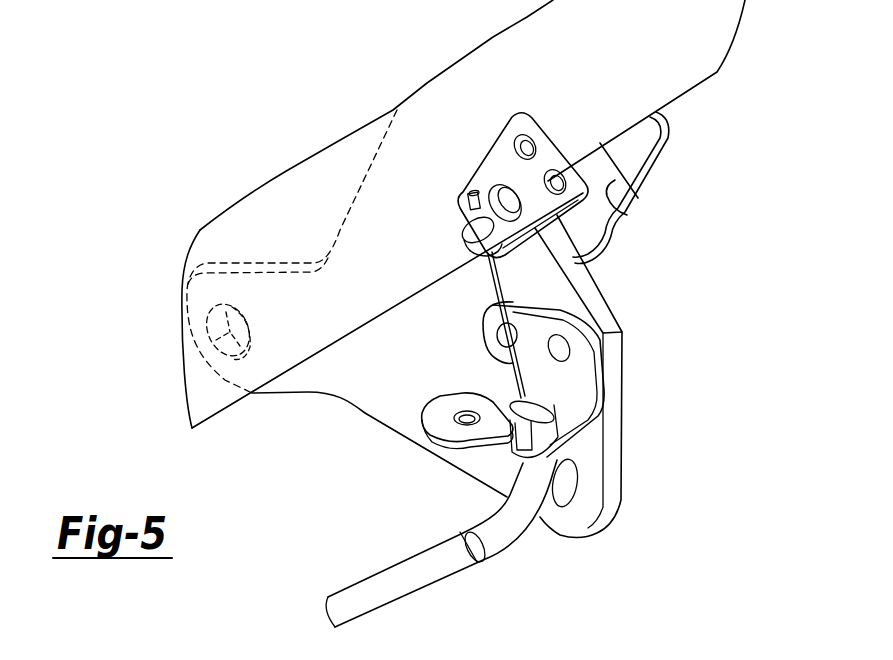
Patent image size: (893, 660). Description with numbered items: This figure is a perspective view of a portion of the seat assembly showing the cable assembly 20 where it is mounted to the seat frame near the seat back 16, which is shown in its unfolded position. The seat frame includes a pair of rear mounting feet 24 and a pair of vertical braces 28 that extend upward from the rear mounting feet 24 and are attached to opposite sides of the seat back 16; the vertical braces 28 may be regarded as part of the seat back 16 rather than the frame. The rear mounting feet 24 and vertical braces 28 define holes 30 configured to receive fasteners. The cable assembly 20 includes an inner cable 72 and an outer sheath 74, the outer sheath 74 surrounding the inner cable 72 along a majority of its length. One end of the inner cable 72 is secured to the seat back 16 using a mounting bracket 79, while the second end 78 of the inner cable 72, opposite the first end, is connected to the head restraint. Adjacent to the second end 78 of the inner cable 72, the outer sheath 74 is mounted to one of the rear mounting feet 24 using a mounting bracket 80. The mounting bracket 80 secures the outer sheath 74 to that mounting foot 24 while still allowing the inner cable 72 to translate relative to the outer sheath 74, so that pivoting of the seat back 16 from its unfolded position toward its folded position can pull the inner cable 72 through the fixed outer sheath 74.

The seat back 16 is at (630, 136).
The cable assembly 20 is at (517, 562).
The rear mounting feet 24 is at (397, 398).
The vertical braces 28 is at (627, 215).
The holes 30 is at (220, 332).
The inner cable 72 is at (520, 382).
The outer sheath 74 is at (382, 595).
The second end 78 is at (487, 270).
The mounting bracket 79 is at (495, 157).
The mounting bracket 80 is at (567, 380).